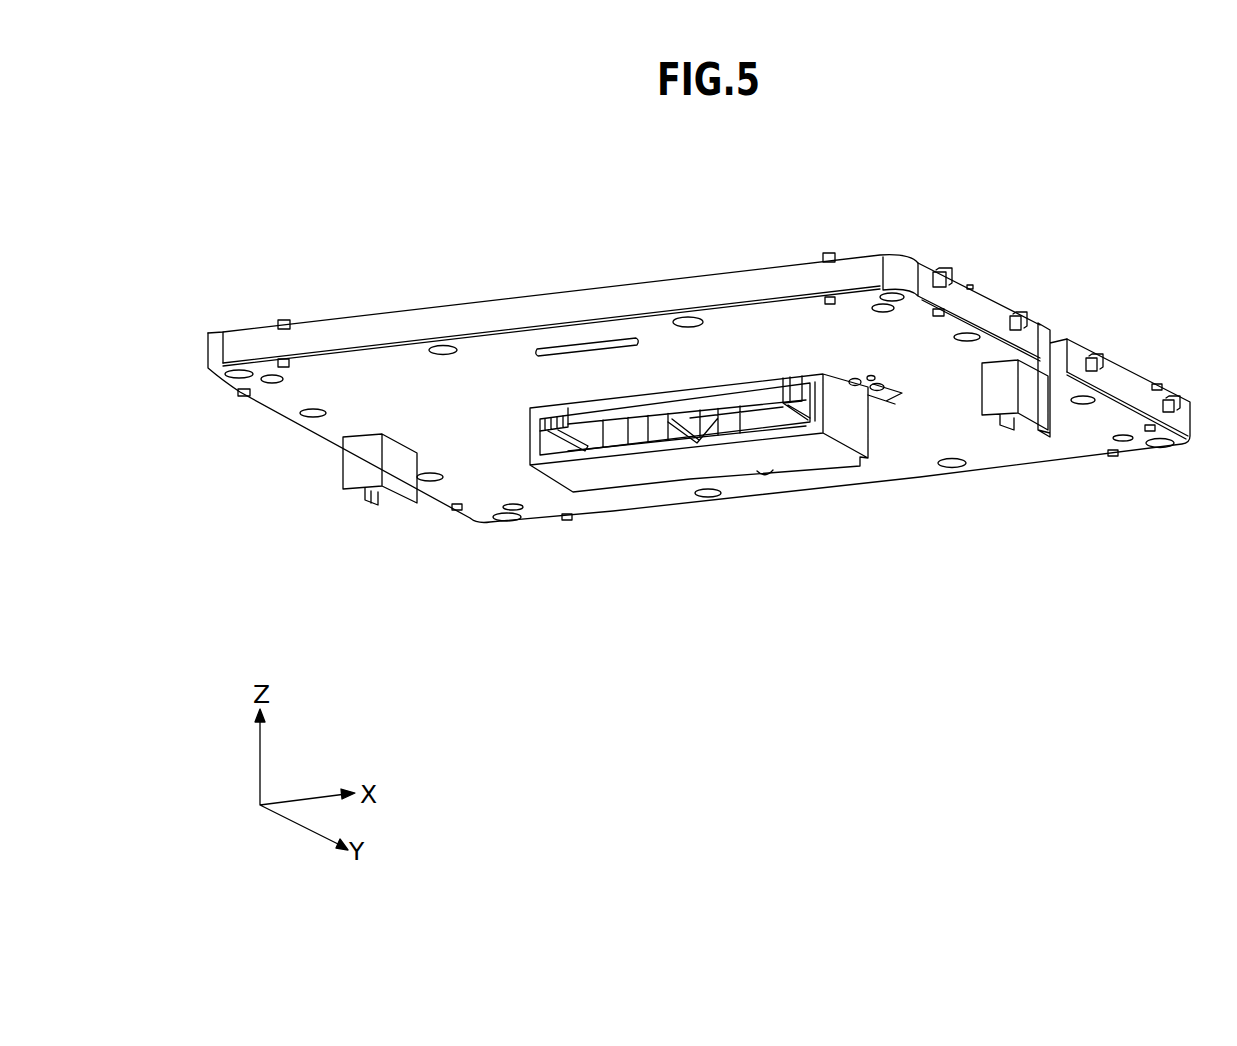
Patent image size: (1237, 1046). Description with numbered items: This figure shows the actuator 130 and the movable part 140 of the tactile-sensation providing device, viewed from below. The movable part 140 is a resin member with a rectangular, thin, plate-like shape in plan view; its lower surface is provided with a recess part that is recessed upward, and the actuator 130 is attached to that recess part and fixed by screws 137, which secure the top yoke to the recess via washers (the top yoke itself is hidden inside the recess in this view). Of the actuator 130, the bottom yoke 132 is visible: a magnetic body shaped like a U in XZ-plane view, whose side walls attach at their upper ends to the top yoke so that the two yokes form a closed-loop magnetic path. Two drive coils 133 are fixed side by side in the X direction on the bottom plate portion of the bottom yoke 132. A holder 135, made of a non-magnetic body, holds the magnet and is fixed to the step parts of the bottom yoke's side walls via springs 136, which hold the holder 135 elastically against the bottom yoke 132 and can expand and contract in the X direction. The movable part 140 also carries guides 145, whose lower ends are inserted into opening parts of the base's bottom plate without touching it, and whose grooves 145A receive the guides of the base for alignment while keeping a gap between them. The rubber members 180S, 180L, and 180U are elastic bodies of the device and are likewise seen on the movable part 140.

The actuator 130 is at (695, 489).
The bottom yoke 132 is at (534, 450).
The drive coils 133 is at (733, 417).
The holder 135 is at (668, 398).
The springs 136 is at (800, 391).
The screws 137 is at (875, 393).
The movable part 140 is at (1113, 388).
The guides 145 is at (357, 458).
The grooves 145A is at (368, 497).
The rubber member 180S is at (943, 276).
The rubber member 180U is at (1157, 384).
The rubber member 180L is at (1113, 458).